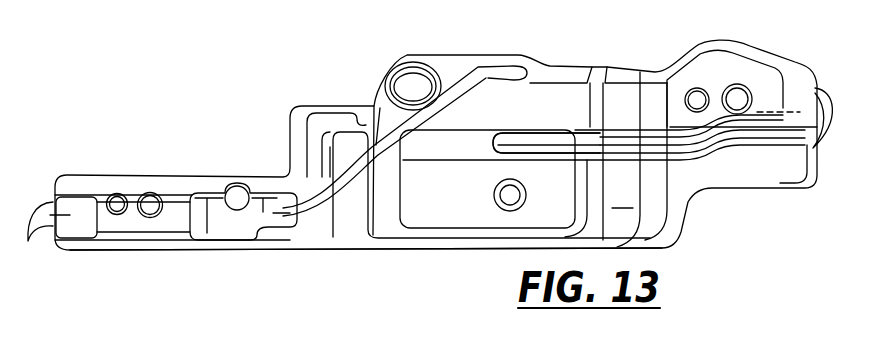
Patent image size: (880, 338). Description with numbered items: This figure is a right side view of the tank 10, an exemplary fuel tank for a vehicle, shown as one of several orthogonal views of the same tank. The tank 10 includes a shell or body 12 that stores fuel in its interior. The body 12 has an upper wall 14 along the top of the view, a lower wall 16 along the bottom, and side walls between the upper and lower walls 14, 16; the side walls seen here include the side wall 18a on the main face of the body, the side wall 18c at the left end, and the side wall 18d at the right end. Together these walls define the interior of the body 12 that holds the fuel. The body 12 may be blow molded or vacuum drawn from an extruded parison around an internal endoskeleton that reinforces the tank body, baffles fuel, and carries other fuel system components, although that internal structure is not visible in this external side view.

The tank 10 is at (147, 40).
The body 12 is at (246, 97).
The upper wall 14 is at (171, 178).
The lower wall 16 is at (230, 250).
The side wall 18a is at (528, 112).
The side wall 18c is at (41, 237).
The side wall 18d is at (841, 104).